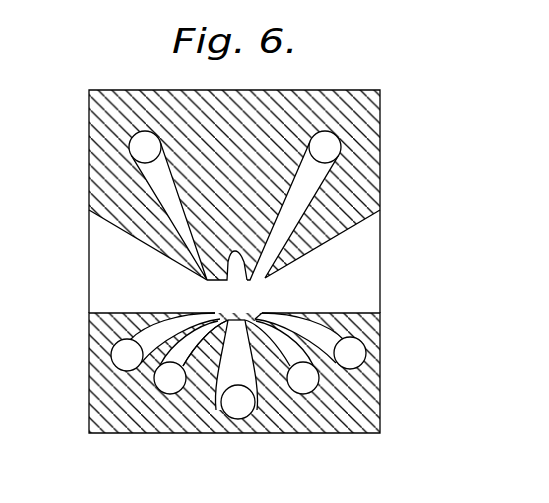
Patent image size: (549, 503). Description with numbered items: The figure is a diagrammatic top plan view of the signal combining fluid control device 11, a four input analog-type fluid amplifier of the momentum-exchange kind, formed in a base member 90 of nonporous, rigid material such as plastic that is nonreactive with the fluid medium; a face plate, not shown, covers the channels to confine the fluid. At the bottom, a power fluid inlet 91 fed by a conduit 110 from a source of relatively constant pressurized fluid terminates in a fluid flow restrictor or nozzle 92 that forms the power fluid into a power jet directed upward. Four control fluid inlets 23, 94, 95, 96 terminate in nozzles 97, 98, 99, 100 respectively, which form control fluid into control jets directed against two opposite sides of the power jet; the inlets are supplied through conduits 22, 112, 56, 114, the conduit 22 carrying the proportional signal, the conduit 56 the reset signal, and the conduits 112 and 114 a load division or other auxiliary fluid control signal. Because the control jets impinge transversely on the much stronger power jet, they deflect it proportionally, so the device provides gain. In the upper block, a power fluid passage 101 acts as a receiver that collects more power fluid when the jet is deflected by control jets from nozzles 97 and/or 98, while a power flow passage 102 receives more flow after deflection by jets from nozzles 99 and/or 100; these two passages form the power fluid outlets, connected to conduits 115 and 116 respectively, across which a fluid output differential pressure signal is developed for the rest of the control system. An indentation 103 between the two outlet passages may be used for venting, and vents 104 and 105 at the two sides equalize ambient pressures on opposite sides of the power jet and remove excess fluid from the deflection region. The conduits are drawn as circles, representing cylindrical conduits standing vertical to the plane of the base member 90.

The signal combining fluid control device 11 is at (417, 130).
The base member 90 is at (385, 94).
The vent 104 is at (97, 270).
The vent 105 is at (372, 247).
The power flow passage 102 is at (192, 238).
The power fluid passage 101 is at (290, 212).
The indentation 103 is at (238, 253).
The conduit 116 is at (130, 147).
The conduit 115 is at (337, 152).
The control fluid inlet 94 is at (153, 331).
The nozzle 98 is at (197, 318).
The nozzle 97 is at (224, 323).
The control fluid inlet 23 is at (186, 355).
The power fluid inlet 91 is at (242, 375).
The nozzle 92 is at (235, 318).
The control fluid inlet 96 is at (318, 328).
The nozzle 100 is at (280, 305).
The control fluid inlet 95 is at (245, 355).
The nozzle 99 is at (246, 323).
The conduit 112 is at (113, 357).
The conduit 22 is at (170, 394).
The conduit 110 is at (238, 420).
The conduit 56 is at (306, 394).
The conduit 114 is at (352, 353).